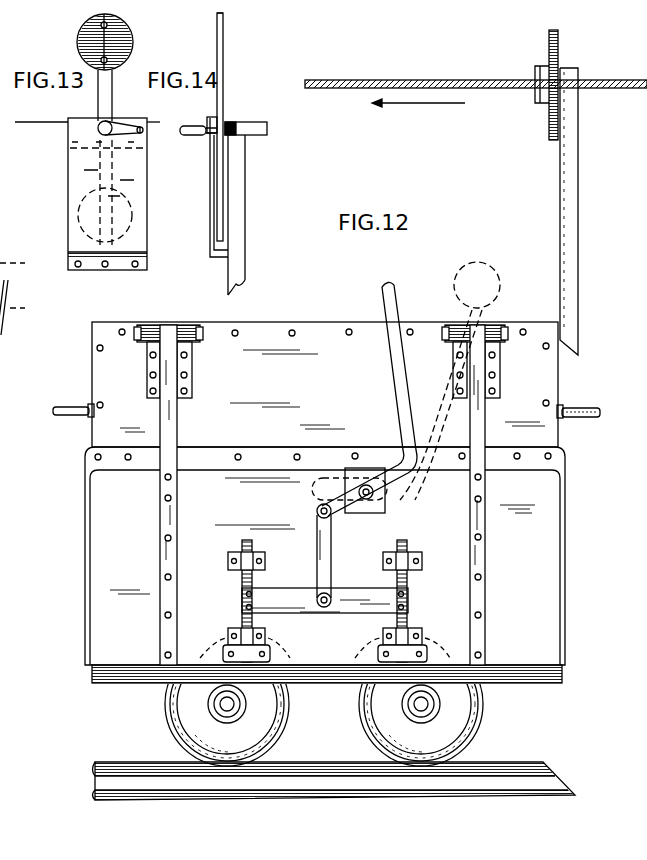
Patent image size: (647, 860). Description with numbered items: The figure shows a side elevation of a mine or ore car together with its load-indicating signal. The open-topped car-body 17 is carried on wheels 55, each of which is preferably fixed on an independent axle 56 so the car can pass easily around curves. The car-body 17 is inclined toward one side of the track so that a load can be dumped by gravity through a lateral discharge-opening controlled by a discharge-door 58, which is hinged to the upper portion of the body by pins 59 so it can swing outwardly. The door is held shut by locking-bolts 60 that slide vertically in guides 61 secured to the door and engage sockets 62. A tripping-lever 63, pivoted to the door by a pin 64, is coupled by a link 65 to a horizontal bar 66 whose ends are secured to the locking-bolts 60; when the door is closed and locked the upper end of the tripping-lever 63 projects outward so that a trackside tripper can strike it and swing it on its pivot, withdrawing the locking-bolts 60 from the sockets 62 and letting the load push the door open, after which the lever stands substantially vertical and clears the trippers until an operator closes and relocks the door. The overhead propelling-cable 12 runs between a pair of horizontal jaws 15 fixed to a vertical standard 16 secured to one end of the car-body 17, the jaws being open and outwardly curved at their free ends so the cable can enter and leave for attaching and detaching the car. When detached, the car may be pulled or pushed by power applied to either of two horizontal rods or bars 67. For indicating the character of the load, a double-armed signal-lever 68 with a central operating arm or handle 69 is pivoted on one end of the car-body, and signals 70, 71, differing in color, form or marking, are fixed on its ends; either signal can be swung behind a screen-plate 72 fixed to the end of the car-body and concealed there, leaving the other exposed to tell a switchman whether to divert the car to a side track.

In FIG. 12, the propelling-cable 12 is at (476, 84).
In FIG. 12, the horizontal jaws 15 is at (534, 85).
In FIG. 12, the vertical standard 16 is at (558, 211).
In FIG. 14, the car-body 17 is at (232, 283).
In FIG. 12, the car-body 17 is at (325, 384).
In FIG. 12, the wheels 55 is at (324, 704).
In FIG. 12, the axle 56 is at (227, 705).
In FIG. 12, the discharge-door 58 is at (325, 565).
In FIG. 12, the pins 59 is at (137, 330).
In FIG. 12, the locking-bolts 60 is at (242, 583).
In FIG. 12, the guides 61 is at (243, 557).
In FIG. 12, the sockets 62 is at (222, 652).
In FIG. 12, the tripping-lever 63 is at (398, 378).
In FIG. 12, the pin 64 is at (378, 492).
In FIG. 12, the link 65 is at (330, 546).
In FIG. 12, the horizontal bar 66 is at (312, 600).
In FIG. 12, the horizontal rods or bars 67 is at (325, 425).
In FIG. 13, the signal-lever 68 is at (105, 97).
In FIG. 14, the signal-lever 68 is at (224, 100).
In FIG. 13, the operating arm or handle 69 is at (147, 128).
In FIG. 13, the signal 70 is at (78, 44).
In FIG. 14, the signal 70 is at (216, 36).
In FIG. 13, the signal 71 is at (80, 220).
In FIG. 14, the signal 71 is at (222, 207).
In FIG. 13, the screen-plate 72 is at (80, 182).
In FIG. 14, the screen-plate 72 is at (210, 217).